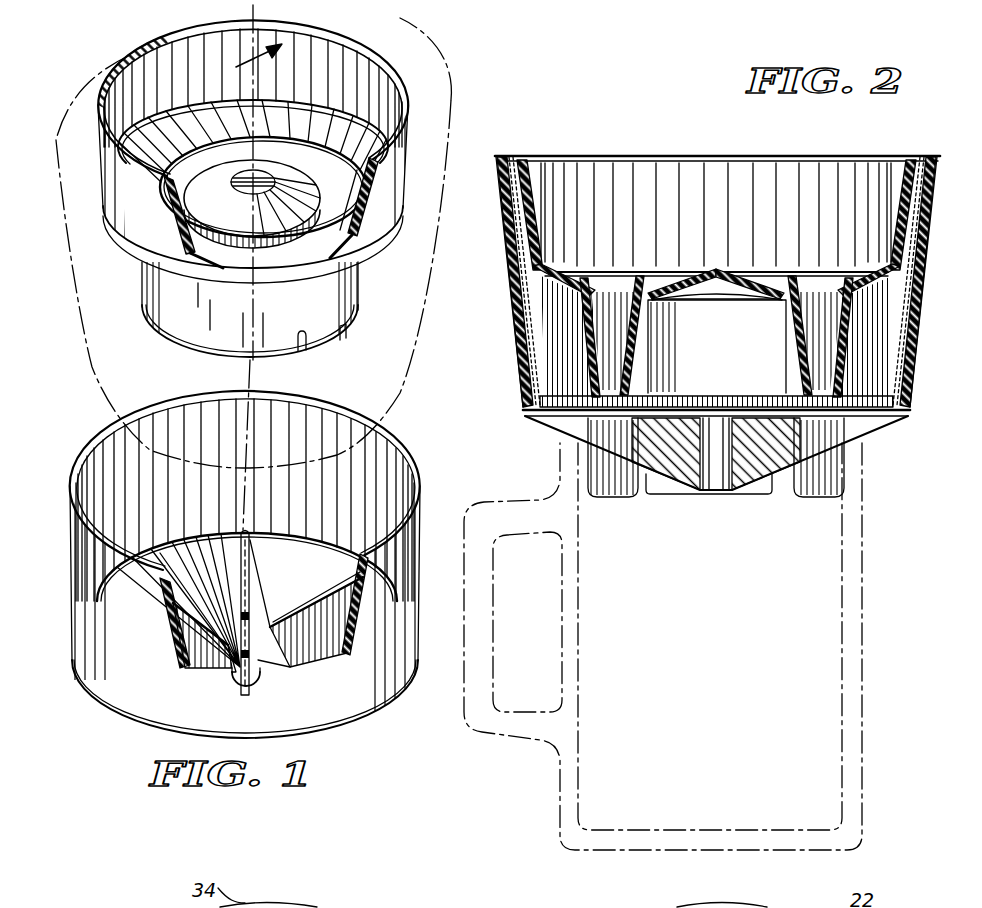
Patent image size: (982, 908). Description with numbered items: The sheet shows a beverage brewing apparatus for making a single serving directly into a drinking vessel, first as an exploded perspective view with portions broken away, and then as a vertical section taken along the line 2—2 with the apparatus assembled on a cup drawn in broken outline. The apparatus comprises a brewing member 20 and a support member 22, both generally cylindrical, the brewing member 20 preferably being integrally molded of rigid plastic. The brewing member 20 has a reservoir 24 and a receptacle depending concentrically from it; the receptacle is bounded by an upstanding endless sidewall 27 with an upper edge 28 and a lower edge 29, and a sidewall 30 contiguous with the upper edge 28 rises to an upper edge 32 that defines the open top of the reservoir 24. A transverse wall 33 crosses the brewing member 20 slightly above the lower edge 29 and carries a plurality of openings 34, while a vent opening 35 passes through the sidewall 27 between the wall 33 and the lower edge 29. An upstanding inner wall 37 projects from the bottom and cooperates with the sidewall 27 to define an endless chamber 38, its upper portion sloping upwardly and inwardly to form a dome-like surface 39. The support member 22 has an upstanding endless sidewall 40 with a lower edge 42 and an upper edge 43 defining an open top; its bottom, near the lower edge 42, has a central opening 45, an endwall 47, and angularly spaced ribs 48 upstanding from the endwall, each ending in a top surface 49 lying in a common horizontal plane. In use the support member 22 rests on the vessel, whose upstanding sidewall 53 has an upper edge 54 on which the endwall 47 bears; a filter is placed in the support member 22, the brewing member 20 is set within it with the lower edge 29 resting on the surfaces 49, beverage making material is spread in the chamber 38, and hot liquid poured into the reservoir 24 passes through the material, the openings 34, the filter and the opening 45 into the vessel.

In FIG. 1, the section line 2— 2 is at (250, 63).
In FIG. 1, the brewing member 20 is at (366, 50).
In FIG. 2, the brewing member 20 is at (802, 158).
In FIG. 2, the support member 22 is at (508, 286).
In FIG. 1, the reservoir 24 is at (408, 188).
In FIG. 1, the sidewall 27 is at (165, 305).
In FIG. 2, the upper edge 28 is at (580, 292).
In FIG. 1, the lower edge 29 is at (343, 327).
In FIG. 2, the lower edge 29 is at (588, 420).
In FIG. 1, the sidewall 30 is at (408, 197).
In FIG. 2, the sidewall 30 is at (522, 175).
In FIG. 2, the upper edge 32 is at (512, 172).
In FIG. 2, the transverse wall 33 is at (812, 388).
In FIG. 2, the openings 34 is at (620, 385).
In FIG. 1, the vent opening 35 is at (302, 343).
In FIG. 2, the vent opening 35 is at (715, 398).
In FIG. 2, the inner wall 37 is at (788, 315).
In FIG. 2, the endless chamber 38 is at (831, 320).
In FIG. 1, the dome-like surface 39 is at (272, 164).
In FIG. 2, the dome-like surface 39 is at (684, 276).
In FIG. 1, the sidewall 40 is at (73, 612).
In FIG. 1, the lower edge 42 is at (101, 688).
In FIG. 1, the upper edge 43 is at (96, 442).
In FIG. 1, the opening 45 is at (235, 678).
In FIG. 1, the endwall 47 is at (232, 547).
In FIG. 1, the ribs 48 is at (332, 602).
In FIG. 1, the top surface 49 is at (284, 622).
In FIG. 2, the sidewall 53 is at (862, 624).
In FIG. 2, the upper edge 54 is at (862, 428).